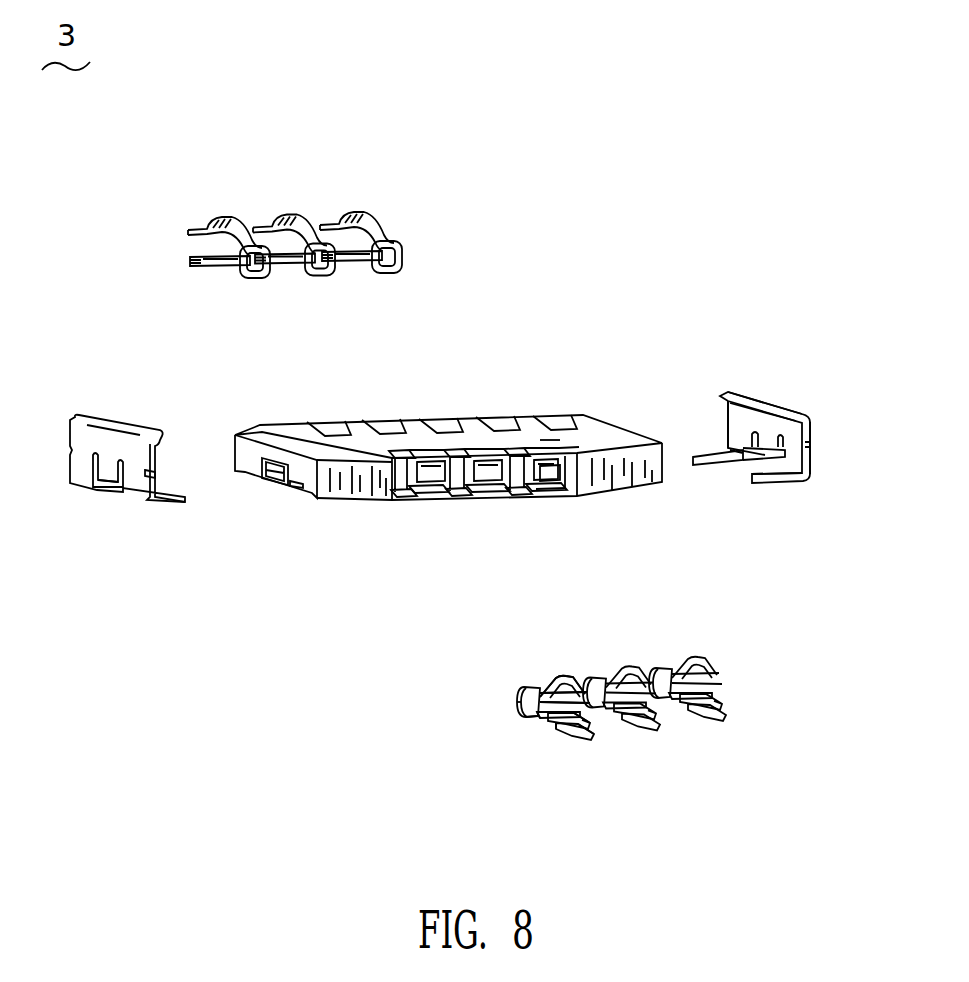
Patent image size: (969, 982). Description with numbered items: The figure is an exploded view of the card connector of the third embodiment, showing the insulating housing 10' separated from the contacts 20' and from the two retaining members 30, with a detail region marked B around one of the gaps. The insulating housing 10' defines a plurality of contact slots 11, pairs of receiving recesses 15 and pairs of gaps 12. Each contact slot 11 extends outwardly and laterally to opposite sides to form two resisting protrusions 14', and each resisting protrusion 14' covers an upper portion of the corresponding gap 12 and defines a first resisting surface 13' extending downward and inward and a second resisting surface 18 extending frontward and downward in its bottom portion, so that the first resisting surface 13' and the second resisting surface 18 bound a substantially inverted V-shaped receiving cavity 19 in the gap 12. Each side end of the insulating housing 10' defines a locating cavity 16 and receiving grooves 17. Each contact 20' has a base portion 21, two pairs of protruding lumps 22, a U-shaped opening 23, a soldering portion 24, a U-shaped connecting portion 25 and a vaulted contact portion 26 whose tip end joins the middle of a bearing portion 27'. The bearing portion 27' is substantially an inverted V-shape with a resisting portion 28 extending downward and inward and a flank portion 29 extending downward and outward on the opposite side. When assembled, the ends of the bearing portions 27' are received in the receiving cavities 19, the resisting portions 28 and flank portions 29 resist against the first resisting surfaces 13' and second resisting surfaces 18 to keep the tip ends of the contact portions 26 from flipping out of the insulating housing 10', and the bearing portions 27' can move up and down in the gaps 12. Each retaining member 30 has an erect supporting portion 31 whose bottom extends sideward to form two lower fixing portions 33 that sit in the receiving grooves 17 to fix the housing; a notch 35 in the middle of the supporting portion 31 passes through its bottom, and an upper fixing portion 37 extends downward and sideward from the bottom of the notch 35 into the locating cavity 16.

The insulating housing 10' is at (446, 459).
The contact slot 11 is at (438, 430).
The gap 12 is at (445, 494).
The first resisting surface 13' is at (538, 514).
The resisting protrusion 14' is at (499, 405).
The receiving recess 15 is at (426, 493).
The locating cavity 16 is at (274, 472).
The receiving groove 17 is at (302, 497).
The second resisting surface 18 is at (548, 478).
The receiving cavity 19 is at (552, 442).
The contact 20' is at (476, 486).
The base portion 21 is at (558, 722).
The protruding lump 22 is at (540, 722).
The U-shaped opening 23 is at (572, 725).
The soldering portion 24 is at (580, 735).
The U-shaped connecting portion 25 is at (530, 692).
The vaulted contact portion 26 is at (566, 680).
The bearing portion 27' is at (541, 668).
The resisting portion 28 is at (545, 700).
The flank portion 29 is at (540, 712).
The retaining member 30 is at (122, 514).
The supporting portion 31 is at (740, 424).
The lower fixing portion 33 is at (775, 480).
The notch 35 is at (776, 470).
The upper fixing portion 37 is at (740, 455).
The detail region B is at (555, 475).